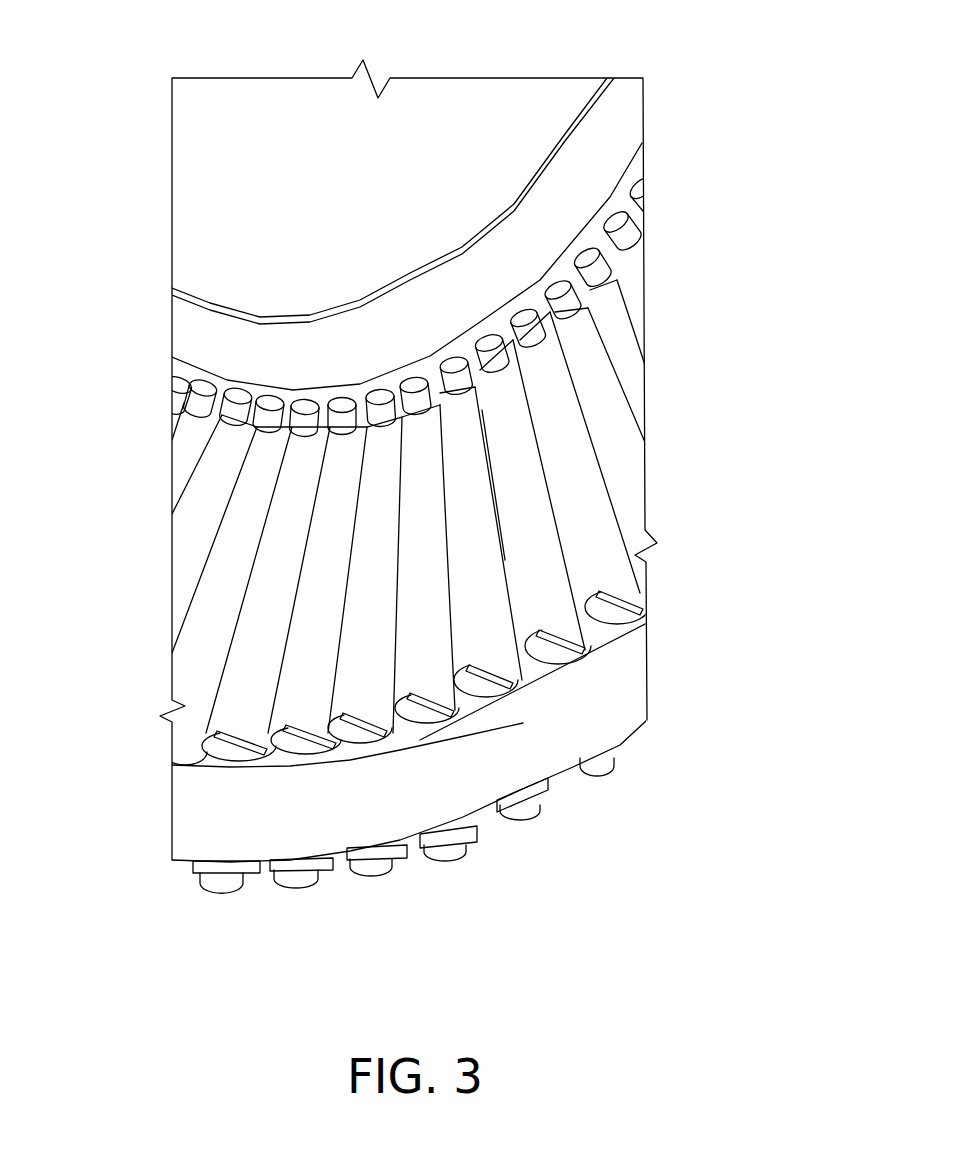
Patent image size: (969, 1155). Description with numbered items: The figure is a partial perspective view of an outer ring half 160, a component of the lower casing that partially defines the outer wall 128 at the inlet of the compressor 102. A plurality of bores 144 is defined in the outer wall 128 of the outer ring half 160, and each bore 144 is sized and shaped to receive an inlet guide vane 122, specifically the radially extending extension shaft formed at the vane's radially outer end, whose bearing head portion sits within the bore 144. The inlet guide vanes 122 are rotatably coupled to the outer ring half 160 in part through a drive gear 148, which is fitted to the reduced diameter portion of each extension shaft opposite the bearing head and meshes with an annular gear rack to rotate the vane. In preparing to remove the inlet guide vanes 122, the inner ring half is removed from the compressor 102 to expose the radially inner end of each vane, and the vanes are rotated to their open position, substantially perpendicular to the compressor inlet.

The compressor 102 is at (522, 92).
The inlet guide vane 122 is at (535, 552).
The outer wall 128 is at (352, 745).
The bore 144 is at (510, 699).
The drive gear 148 is at (197, 884).
The outer ring half 160 is at (186, 789).